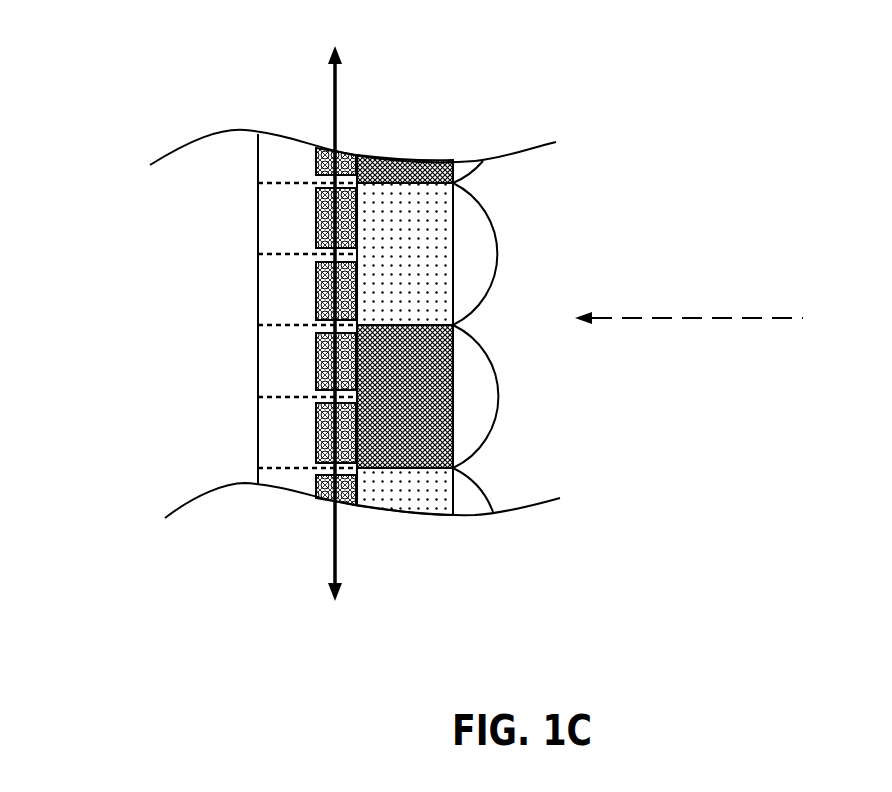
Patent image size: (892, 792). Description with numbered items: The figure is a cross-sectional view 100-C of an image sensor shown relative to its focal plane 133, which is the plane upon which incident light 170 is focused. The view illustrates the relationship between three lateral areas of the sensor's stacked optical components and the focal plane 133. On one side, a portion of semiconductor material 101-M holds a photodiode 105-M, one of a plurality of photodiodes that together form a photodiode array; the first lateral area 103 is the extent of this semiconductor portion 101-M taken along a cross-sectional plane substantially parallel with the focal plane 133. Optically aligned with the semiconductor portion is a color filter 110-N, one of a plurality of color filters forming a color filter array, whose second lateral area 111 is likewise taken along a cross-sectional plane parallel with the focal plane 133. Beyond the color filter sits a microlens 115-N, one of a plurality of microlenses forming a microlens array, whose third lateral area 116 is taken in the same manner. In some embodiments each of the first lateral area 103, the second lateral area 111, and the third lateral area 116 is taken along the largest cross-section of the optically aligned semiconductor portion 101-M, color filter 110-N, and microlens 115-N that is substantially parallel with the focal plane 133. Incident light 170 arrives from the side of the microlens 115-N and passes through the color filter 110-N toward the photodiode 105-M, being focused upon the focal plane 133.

The cross-sectional view 100-C is at (83, 13).
The portion of semiconductor material 101-M is at (259, 183).
The first lateral area 103 is at (277, 195).
The photodiode 105-M is at (316, 194).
The color filter 110-N is at (428, 186).
The second lateral area 111 is at (403, 196).
The microlens 115-N is at (490, 200).
The third lateral area 116 is at (453, 196).
The focal plane 133 is at (331, 308).
The incident light 170 is at (689, 289).